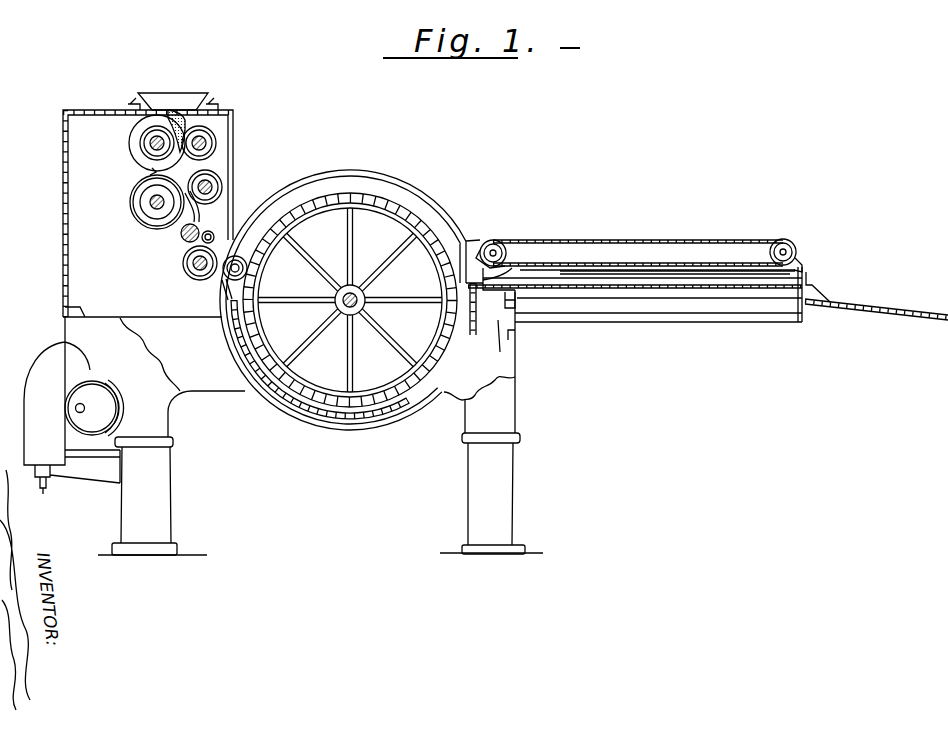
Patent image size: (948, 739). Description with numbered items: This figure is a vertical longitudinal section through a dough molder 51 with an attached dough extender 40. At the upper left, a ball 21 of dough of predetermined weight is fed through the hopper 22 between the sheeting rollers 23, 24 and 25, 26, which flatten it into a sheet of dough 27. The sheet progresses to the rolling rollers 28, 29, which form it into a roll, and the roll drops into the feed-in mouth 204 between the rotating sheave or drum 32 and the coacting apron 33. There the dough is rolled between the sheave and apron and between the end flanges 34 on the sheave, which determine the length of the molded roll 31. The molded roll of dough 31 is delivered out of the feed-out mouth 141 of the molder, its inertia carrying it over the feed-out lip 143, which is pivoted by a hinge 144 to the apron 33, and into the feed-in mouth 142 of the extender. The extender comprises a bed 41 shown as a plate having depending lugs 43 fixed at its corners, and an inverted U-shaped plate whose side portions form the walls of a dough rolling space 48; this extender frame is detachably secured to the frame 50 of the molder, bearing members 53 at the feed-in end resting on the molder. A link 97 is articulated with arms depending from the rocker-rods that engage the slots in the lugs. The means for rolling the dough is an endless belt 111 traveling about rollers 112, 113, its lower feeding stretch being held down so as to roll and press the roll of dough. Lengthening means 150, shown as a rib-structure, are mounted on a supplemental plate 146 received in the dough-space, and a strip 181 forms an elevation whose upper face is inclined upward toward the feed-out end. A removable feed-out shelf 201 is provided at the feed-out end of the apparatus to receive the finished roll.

The ball of dough 21 is at (180, 113).
The hopper 22 is at (166, 100).
The sheeting roller 23 is at (140, 146).
The sheeting roller 24 is at (218, 144).
The sheeting roller 25 is at (131, 207).
The sheeting roller 26 is at (222, 186).
The sheet of dough 27 is at (190, 212).
The rolling roller 28 is at (182, 237).
The rolling roller 29 is at (184, 265).
The roll of dough 31 is at (239, 258).
The sheave 32 is at (371, 195).
The apron 33 is at (322, 427).
The end flanges 34 is at (404, 189).
The dough extender 40 is at (649, 239).
The bed 41 is at (597, 288).
The depending lug 43 is at (522, 294).
The dough rolling space 48 is at (577, 269).
The molder frame 50 is at (516, 335).
The dough molder 51 is at (232, 397).
The bearing members 53 is at (509, 325).
The link 97 is at (673, 316).
The endless belt 111 is at (696, 241).
The roller 112 is at (498, 242).
The roller 113 is at (788, 243).
The feed-out mouth 141 is at (472, 272).
The feed-in mouth 142 is at (515, 265).
The feed-out lip 143 is at (481, 322).
The hinge 144 is at (482, 240).
The supplemental plate 146 is at (554, 284).
The lengthening means 150 is at (621, 273).
The strip 181 is at (718, 270).
The feed-out shelf 201 is at (896, 310).
The feed-in mouth 204 is at (226, 284).